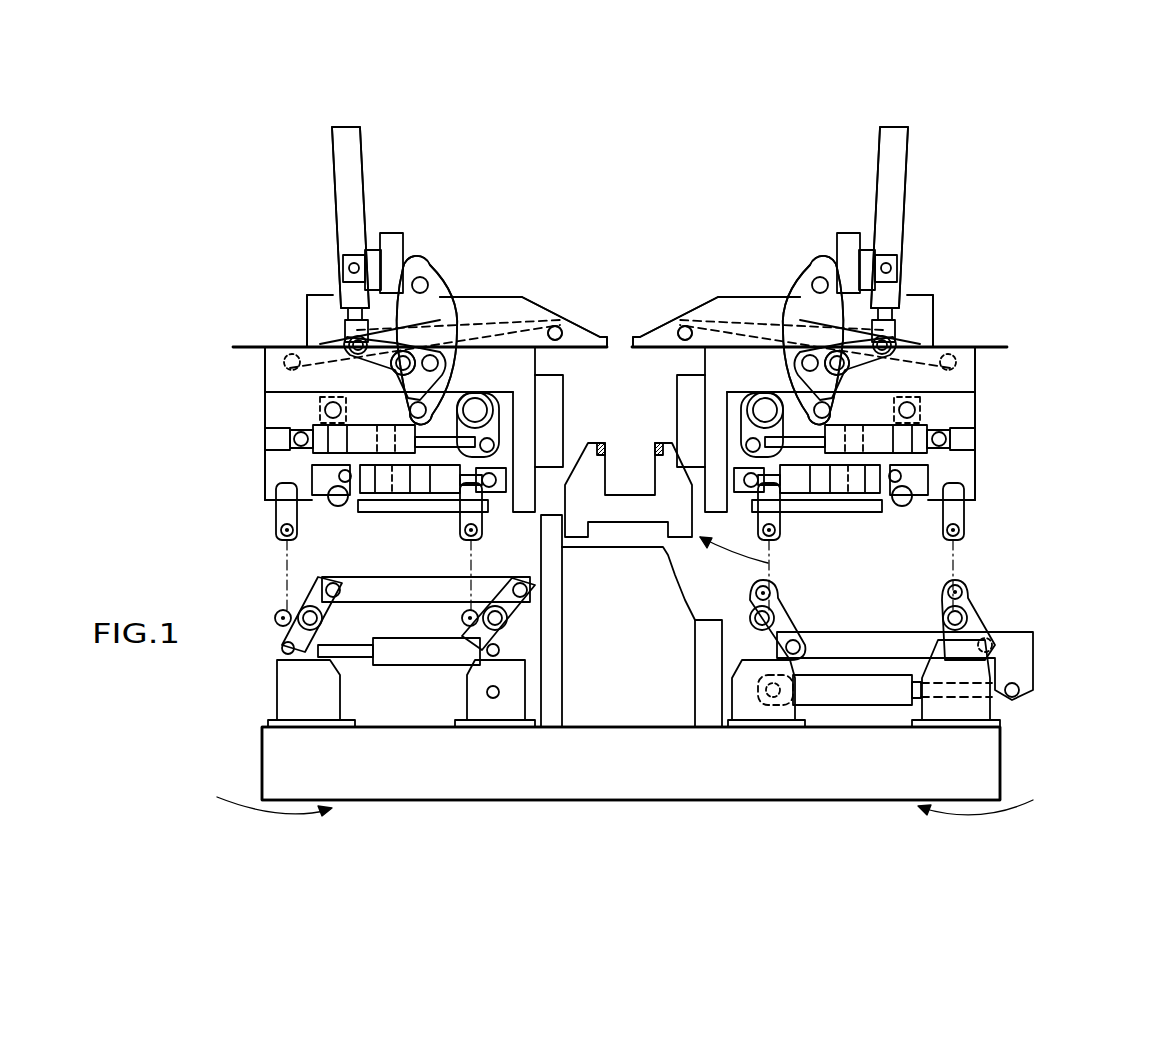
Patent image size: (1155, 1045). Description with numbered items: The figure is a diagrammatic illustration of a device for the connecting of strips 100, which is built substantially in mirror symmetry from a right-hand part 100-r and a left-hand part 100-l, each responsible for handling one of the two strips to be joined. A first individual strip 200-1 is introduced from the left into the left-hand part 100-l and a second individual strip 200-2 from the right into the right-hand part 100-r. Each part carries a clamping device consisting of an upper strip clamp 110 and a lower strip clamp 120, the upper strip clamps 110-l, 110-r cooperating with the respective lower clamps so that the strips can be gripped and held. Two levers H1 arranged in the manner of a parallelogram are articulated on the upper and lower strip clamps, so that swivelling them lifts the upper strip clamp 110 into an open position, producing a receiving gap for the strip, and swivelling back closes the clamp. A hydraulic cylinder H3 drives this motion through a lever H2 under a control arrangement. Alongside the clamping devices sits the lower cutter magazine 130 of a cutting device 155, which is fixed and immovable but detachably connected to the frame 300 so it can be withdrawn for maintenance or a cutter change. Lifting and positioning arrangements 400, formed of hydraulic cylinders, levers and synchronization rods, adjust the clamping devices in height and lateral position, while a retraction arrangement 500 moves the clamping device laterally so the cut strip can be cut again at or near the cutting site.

The device for the connecting of strips 100 is at (655, 145).
The left-hand part of the device 100-l is at (241, 790).
The right-hand part of the device 100-r is at (1013, 799).
The upper strip clamp 110 is at (710, 310).
The left upper strip clamp 110-l is at (485, 268).
The right upper strip clamp 110-r is at (731, 268).
The lower strip clamp 120 is at (270, 365).
The lower cutter magazine 130 is at (631, 510).
The cutting device 155 is at (756, 557).
The first individual strip 200-1 is at (242, 347).
The second individual strip 200-2 is at (997, 345).
The frame 300 is at (993, 750).
The lifting and positioning arrangement 400 is at (877, 648).
The retraction arrangement 500 is at (377, 585).
The lever H1 is at (337, 343).
The lever H2 is at (395, 375).
The hydraulic cylinder H3 is at (353, 158).